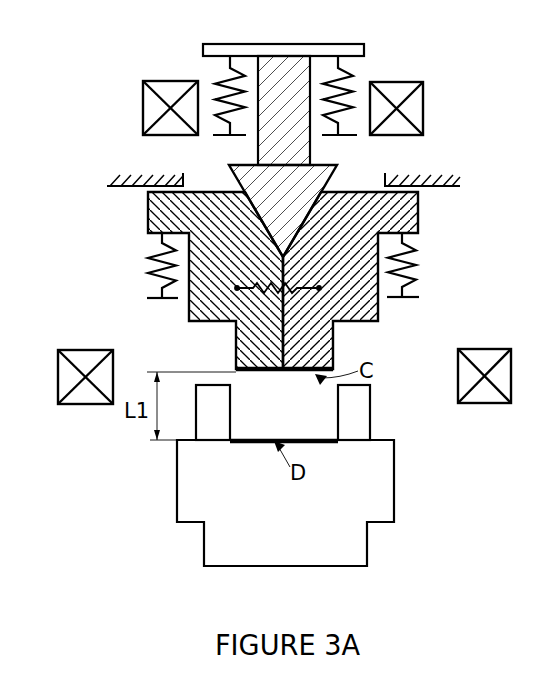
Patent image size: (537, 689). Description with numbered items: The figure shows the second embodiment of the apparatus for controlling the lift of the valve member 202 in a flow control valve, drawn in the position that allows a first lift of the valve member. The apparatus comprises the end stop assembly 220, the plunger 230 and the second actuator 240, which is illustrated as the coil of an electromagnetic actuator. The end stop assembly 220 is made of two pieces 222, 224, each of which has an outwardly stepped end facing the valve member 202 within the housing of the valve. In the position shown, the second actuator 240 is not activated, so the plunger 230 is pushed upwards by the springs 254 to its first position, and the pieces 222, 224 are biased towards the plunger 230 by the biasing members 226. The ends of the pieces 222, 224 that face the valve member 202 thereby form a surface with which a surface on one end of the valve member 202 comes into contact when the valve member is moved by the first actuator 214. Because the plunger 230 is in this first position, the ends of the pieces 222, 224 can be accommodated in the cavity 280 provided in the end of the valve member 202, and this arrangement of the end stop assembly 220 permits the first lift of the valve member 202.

The valve member 202 is at (348, 554).
The first actuator 214 is at (473, 407).
The end stop assembly 220 is at (277, 280).
The first piece of end stop assembly 222 is at (177, 210).
The second piece of end stop assembly 224 is at (418, 208).
The biasing members 226 is at (237, 289).
The plunger 230 is at (288, 88).
The second actuator 240 is at (425, 94).
The springs 254 is at (222, 80).
The cavity 280 is at (300, 422).